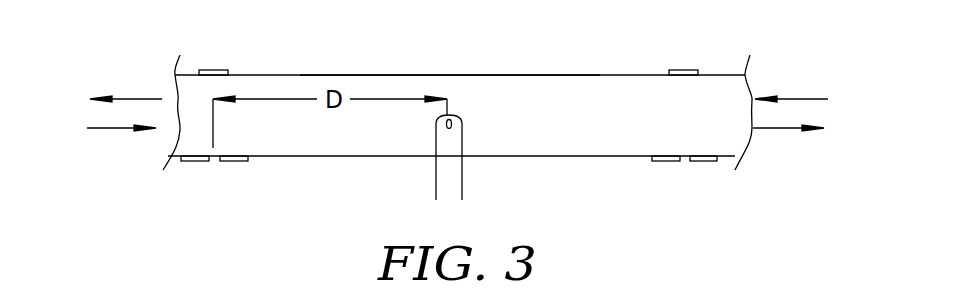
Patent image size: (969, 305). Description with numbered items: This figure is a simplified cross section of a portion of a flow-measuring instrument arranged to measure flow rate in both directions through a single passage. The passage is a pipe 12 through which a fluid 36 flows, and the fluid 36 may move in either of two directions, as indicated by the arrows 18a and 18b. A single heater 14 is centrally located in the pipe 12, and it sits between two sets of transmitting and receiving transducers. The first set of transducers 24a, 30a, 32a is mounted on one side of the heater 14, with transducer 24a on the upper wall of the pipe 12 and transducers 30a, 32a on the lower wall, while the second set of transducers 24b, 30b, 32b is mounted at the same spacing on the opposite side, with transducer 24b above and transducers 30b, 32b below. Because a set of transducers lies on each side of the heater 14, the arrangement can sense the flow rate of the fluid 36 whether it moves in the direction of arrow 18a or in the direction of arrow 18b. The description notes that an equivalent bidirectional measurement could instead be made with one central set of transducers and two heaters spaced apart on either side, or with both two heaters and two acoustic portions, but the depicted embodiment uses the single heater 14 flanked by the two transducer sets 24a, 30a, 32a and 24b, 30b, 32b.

The pipe 12 is at (553, 157).
The heater 14 is at (436, 125).
The arrow indicating first flow direction 18a is at (135, 99).
The arrow indicating second flow direction 18b is at (117, 128).
The transducer of first set 24a is at (220, 70).
The transducer of second set 24b is at (685, 70).
The transducer of first set 30a is at (232, 161).
The transducer of second set 30b is at (665, 162).
The transducer of first set 32a is at (193, 161).
The transducer of second set 32b is at (706, 162).
The fluid 36 is at (500, 98).